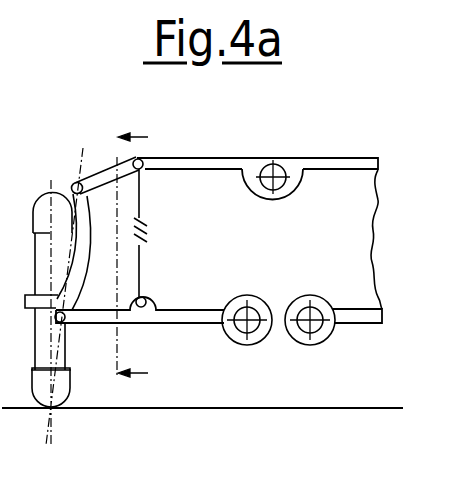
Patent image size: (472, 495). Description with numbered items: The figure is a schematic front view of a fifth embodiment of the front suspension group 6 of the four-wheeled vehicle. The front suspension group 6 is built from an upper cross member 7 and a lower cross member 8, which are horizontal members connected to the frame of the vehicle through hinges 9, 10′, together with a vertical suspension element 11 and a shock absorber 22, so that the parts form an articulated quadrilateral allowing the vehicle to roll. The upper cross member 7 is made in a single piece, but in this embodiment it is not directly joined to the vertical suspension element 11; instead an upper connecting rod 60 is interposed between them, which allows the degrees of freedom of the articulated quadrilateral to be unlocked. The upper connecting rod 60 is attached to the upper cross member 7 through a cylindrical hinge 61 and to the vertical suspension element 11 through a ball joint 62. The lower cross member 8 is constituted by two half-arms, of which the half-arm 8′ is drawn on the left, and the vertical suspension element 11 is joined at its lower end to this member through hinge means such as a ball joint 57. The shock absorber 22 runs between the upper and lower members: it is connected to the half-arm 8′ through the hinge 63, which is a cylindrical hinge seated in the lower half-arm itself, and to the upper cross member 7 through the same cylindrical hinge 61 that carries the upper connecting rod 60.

The front suspension group 6 is at (335, 145).
The upper cross member 7 is at (353, 163).
The lower cross member 8 is at (221, 378).
The lower half-arm 8′ is at (183, 320).
The hinge 9 is at (278, 172).
The hinge 10′ is at (318, 311).
The vertical suspension element 11 is at (82, 270).
The shock absorber 22 is at (148, 227).
The ball joint 57 is at (68, 322).
The upper connecting rod 60 is at (100, 178).
The cylindrical hinge 61 is at (147, 157).
The ball joint 62 is at (75, 182).
The hinge 63 is at (146, 298).